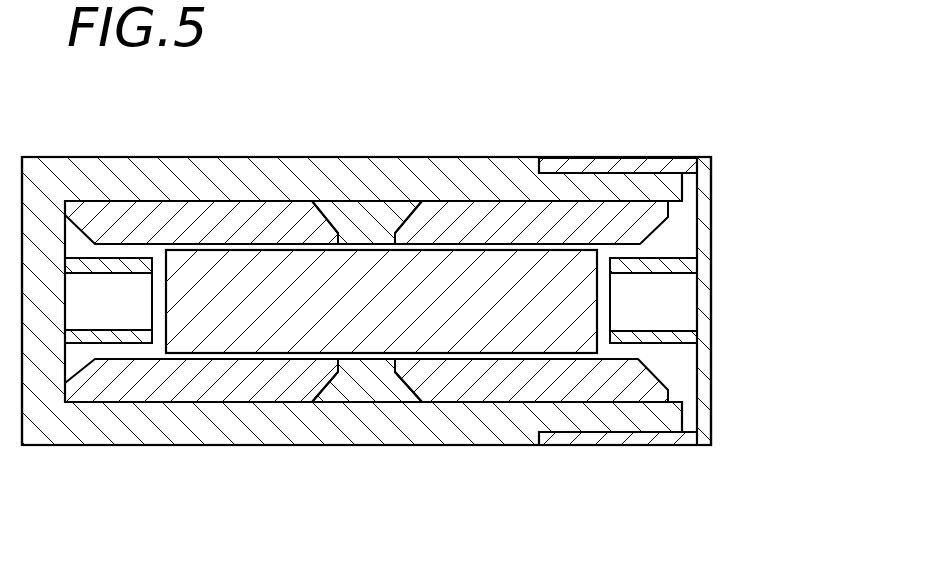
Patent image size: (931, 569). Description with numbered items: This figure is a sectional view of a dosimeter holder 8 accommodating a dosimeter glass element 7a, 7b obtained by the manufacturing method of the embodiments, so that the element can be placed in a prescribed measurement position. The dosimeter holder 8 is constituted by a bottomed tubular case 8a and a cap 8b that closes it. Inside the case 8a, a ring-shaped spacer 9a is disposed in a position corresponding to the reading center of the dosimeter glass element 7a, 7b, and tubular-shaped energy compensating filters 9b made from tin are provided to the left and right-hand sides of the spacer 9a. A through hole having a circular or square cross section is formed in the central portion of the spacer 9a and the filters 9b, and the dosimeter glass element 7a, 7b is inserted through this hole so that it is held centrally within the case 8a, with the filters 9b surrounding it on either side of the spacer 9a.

The dosimeter holder 8 is at (683, 132).
The case 8a is at (366, 267).
The cap 8b is at (618, 260).
The spacer 9a is at (367, 367).
The energy compensating filter 9b is at (366, 367).
The dosimeter glass element 7a is at (330, 391).
The dosimeter glass element 7b is at (381, 301).